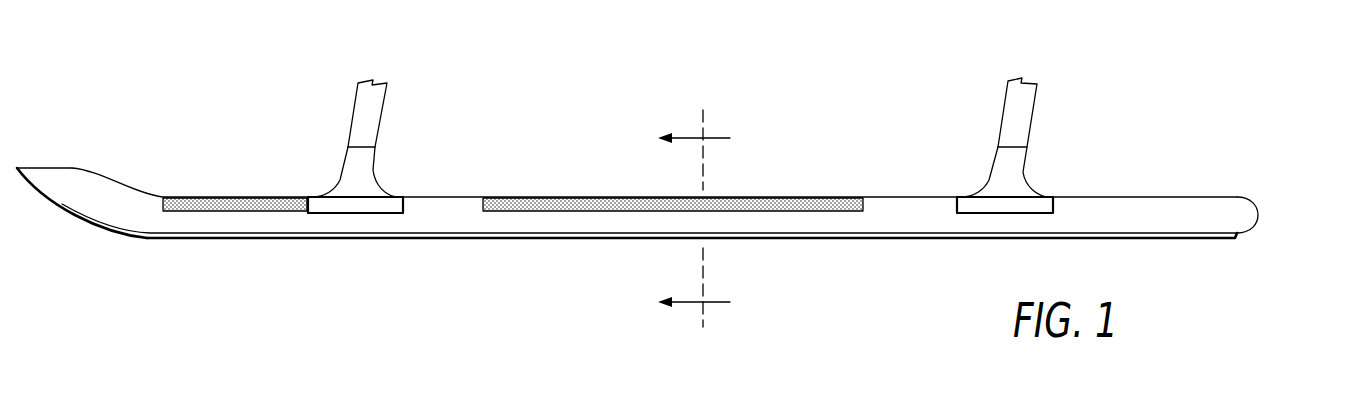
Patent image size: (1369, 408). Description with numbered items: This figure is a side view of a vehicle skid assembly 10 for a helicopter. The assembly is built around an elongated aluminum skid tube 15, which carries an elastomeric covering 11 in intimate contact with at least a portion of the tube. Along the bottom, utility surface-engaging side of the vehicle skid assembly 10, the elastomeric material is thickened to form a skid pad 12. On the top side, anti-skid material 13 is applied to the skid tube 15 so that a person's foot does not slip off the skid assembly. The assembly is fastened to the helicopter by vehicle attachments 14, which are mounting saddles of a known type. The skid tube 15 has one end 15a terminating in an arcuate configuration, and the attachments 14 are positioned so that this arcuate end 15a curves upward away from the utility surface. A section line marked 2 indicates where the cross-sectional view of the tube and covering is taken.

The vehicle skid assembly 10 is at (688, 186).
The elastomeric covering 11 is at (1148, 207).
The skid pad 12 is at (307, 237).
The anti-skid material 13 is at (200, 203).
The vehicle attachments 14 is at (373, 193).
The skid tube 15 is at (1254, 185).
The arcuate end 15a is at (40, 156).
The section line 2- 2 is at (694, 223).